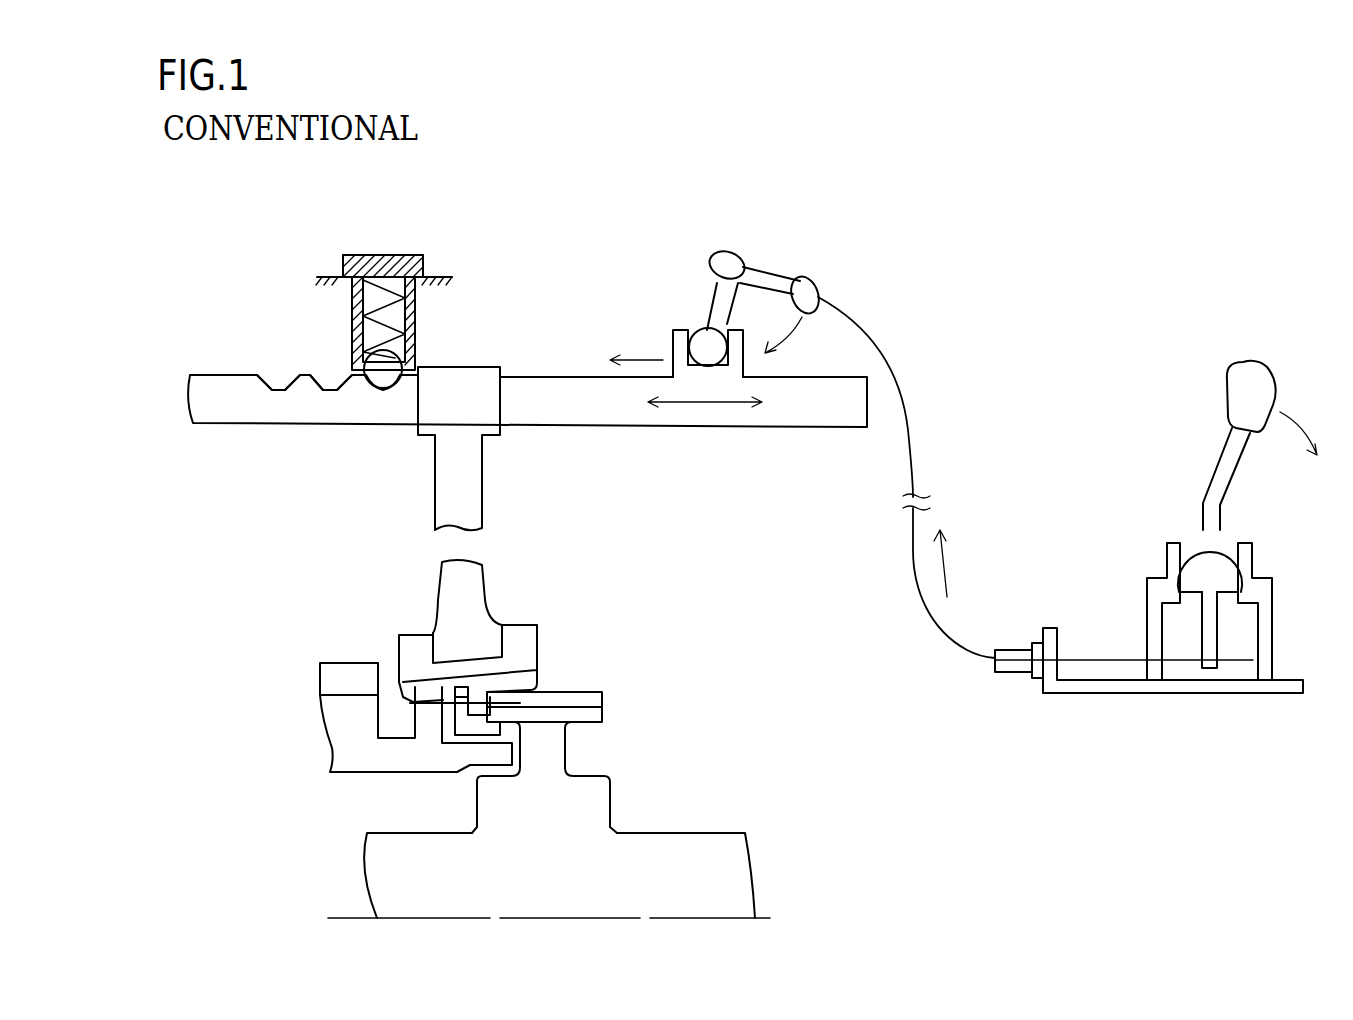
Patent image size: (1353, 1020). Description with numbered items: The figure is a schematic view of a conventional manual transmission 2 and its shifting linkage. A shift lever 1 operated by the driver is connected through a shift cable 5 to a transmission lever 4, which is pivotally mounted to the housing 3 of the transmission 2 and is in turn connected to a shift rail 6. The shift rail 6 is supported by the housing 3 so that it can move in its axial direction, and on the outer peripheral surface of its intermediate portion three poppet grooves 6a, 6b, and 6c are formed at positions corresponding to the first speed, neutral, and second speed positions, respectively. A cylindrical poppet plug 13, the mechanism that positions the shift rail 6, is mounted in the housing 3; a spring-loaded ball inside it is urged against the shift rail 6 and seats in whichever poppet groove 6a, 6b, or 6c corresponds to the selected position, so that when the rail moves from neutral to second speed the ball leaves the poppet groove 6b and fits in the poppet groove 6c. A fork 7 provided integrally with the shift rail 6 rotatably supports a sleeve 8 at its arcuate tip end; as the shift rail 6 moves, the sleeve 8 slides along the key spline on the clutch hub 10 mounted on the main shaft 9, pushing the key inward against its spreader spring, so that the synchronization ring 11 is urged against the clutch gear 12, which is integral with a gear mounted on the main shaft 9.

The shift lever 1 is at (1206, 462).
The transmission 2 is at (699, 217).
The housing 3 is at (330, 275).
The transmission lever 4 is at (773, 277).
The shift cable 5 is at (903, 373).
The shift rail 6 is at (705, 428).
The poppet groove 6a is at (270, 390).
The poppet groove 6b is at (318, 392).
The poppet groove 6c is at (383, 392).
The fork 7 is at (470, 487).
The sleeve 8 is at (527, 632).
The main shaft 9 is at (730, 880).
The clutch hub 10 is at (596, 793).
The synchronization ring 11 is at (555, 723).
The clutch gear 12 is at (425, 717).
The poppet plug 13 is at (396, 243).